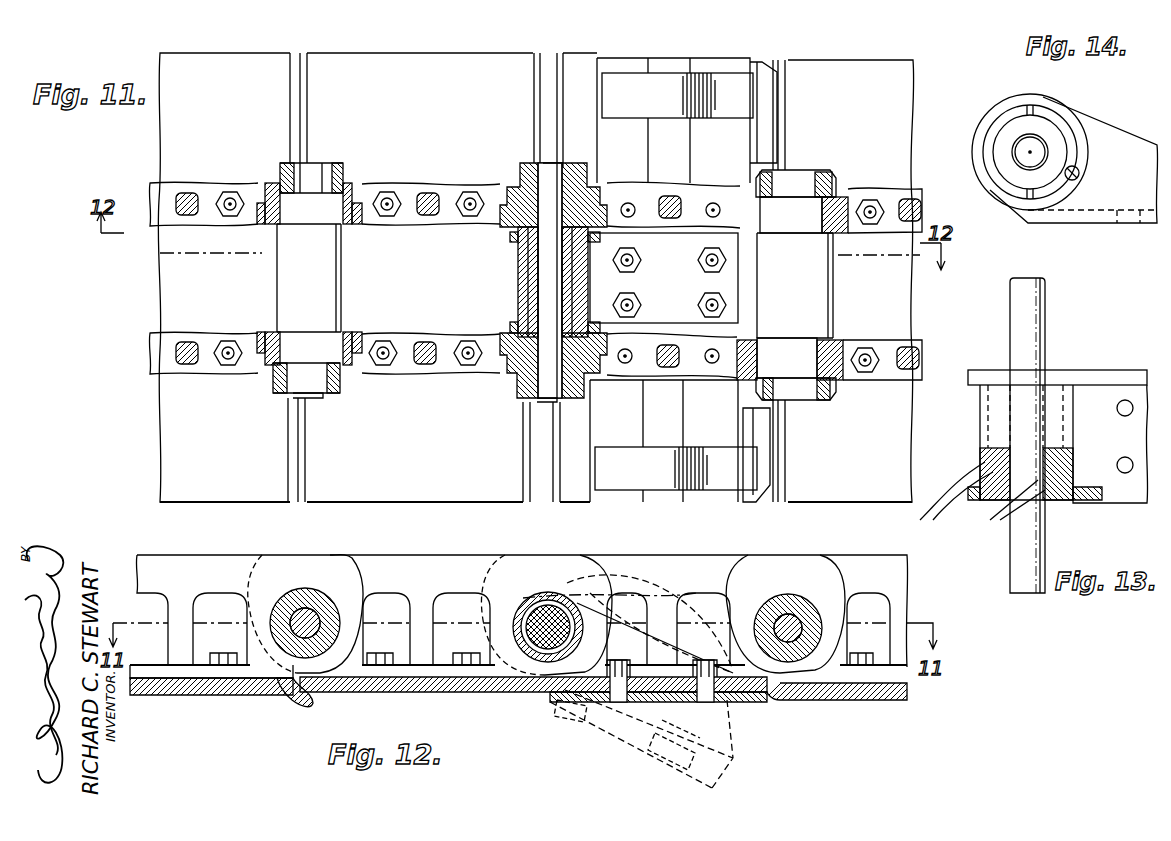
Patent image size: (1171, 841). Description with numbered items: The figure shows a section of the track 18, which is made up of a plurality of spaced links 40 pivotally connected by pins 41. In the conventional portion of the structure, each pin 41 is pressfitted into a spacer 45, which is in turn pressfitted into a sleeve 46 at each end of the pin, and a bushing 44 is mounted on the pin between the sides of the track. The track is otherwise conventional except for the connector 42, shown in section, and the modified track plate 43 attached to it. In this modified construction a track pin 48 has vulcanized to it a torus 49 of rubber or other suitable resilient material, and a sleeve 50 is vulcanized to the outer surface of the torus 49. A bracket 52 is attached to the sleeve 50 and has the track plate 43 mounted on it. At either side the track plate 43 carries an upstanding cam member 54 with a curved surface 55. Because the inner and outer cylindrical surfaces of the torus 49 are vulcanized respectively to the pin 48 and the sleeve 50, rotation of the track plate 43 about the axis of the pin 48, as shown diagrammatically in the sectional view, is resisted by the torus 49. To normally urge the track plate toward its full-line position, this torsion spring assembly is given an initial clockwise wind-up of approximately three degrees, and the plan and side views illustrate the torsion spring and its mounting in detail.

In FIG. 11, the track 18 is at (144, 422).
In FIG. 12, the track 18 is at (247, 711).
In FIG. 11, the links 40 is at (228, 172).
In FIG. 12, the links 40 is at (200, 678).
In FIG. 11, the pins 41 is at (315, 398).
In FIG. 12, the pins 41 is at (315, 612).
In FIG. 11, the connector 42 is at (536, 277).
In FIG. 12, the connector 42 is at (515, 611).
In FIG. 13, the connector 42 is at (1014, 460).
In FIG. 14, the connector 42 is at (1021, 141).
In FIG. 11, the track plate 43 is at (683, 266).
In FIG. 12, the track plate 43 is at (612, 734).
In FIG. 11, the bushing 44 is at (277, 293).
In FIG. 12, the bushing 44 is at (288, 605).
In FIG. 11, the spacer 45 is at (300, 190).
In FIG. 11, the sleeve 46 is at (350, 192).
In FIG. 11, the track pin 48 is at (508, 283).
In FIG. 12, the track pin 48 is at (556, 598).
In FIG. 13, the track pin 48 is at (1035, 336).
In FIG. 14, the track pin 48 is at (1020, 151).
In FIG. 11, the torus 49 is at (513, 238).
In FIG. 12, the torus 49 is at (521, 637).
In FIG. 13, the torus 49 is at (1058, 446).
In FIG. 14, the torus 49 is at (1055, 149).
In FIG. 11, the sleeve 50 is at (517, 300).
In FIG. 12, the sleeve 50 is at (513, 619).
In FIG. 13, the sleeve 50 is at (1072, 467).
In FIG. 14, the sleeve 50 is at (1055, 121).
In FIG. 11, the bracket 52 is at (664, 278).
In FIG. 12, the bracket 52 is at (612, 623).
In FIG. 13, the bracket 52 is at (1087, 370).
In FIG. 14, the bracket 52 is at (1137, 142).
In FIG. 11, the cam member 54 is at (718, 70).
In FIG. 12, the cam member 54 is at (673, 598).
In FIG. 11, the curved surface 55 is at (670, 100).
In FIG. 12, the curved surface 55 is at (711, 591).